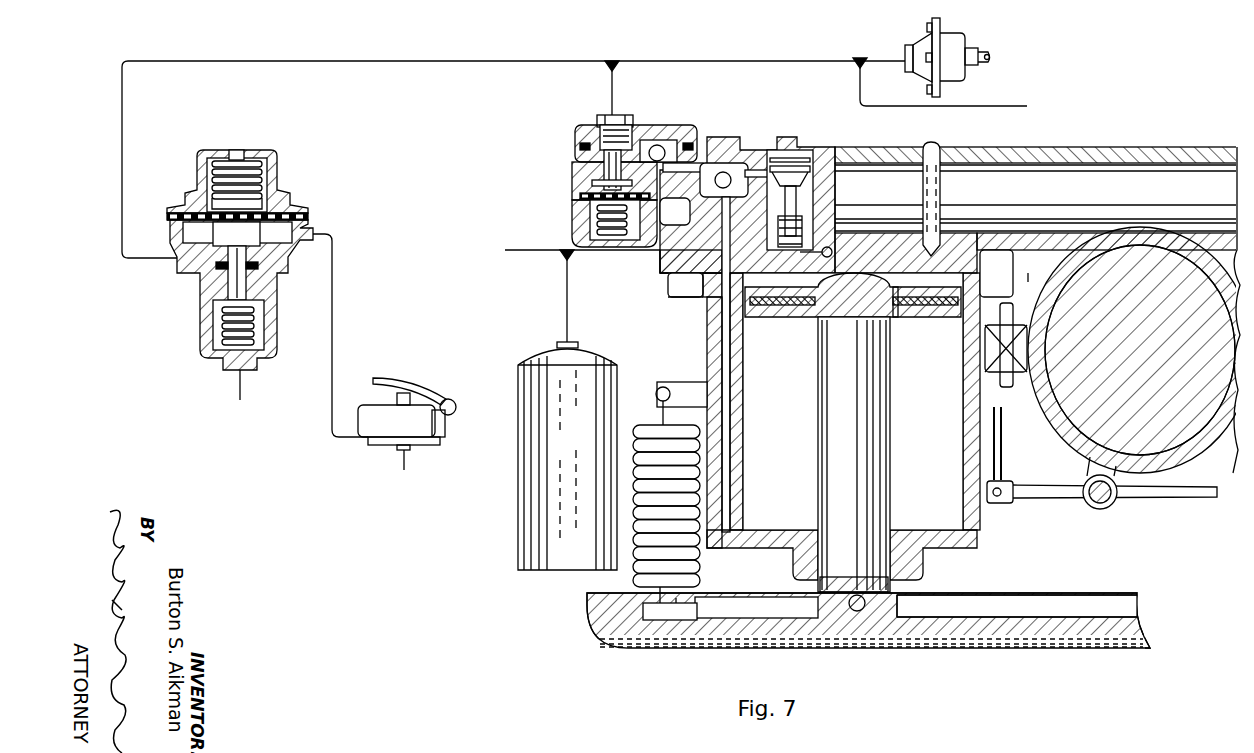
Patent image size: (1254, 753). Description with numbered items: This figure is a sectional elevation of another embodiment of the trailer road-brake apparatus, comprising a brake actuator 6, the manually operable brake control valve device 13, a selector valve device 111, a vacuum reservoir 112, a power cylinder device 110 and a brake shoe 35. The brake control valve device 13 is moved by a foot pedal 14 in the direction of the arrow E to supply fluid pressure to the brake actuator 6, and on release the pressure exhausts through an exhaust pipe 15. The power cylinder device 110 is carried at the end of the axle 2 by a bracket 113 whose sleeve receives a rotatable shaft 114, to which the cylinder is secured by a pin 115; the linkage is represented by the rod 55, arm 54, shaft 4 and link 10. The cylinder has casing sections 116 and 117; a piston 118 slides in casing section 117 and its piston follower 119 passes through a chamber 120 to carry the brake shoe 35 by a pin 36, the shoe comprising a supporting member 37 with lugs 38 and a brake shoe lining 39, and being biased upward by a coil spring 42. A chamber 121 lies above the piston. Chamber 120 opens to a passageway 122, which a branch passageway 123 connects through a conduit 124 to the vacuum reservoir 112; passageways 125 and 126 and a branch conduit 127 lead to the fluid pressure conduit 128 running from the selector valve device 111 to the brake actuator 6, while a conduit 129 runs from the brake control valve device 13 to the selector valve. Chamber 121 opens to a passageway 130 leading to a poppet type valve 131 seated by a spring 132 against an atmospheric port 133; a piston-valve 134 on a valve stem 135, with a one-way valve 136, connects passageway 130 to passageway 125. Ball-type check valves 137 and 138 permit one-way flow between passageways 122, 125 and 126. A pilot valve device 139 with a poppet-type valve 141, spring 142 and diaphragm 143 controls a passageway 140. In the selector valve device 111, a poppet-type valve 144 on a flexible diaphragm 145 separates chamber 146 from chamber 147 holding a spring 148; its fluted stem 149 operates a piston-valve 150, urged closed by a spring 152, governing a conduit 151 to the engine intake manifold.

The axle 2 is at (1090, 472).
The shaft 4 is at (1091, 504).
The brake actuator 6 is at (954, 72).
The link 10 is at (1158, 494).
The brake control valve device 13 is at (440, 419).
The foot pedal 14 is at (427, 392).
The exhaust pipe 15 is at (405, 462).
The brake shoe 35 is at (868, 639).
The pin 36 is at (822, 606).
The supporting member 37 is at (860, 626).
The lug 38 is at (893, 601).
The brake shoe lining 39 is at (966, 645).
The coil spring 42 is at (640, 571).
The arm 54 is at (1036, 498).
The rod 55 is at (996, 440).
The power cylinder device 110 is at (938, 354).
The selector valve device 111 is at (215, 280).
The vacuum reservoir 112 is at (528, 490).
The bracket 113 is at (1212, 447).
The shaft 114 is at (1035, 182).
The pin 115 is at (932, 150).
The casing section 116 is at (667, 279).
The casing section 117 is at (774, 542).
The piston 118 is at (760, 306).
The piston follower 119 is at (878, 498).
The chamber 120 is at (850, 356).
The chamber 121 is at (920, 306).
The passageway 122 is at (728, 497).
The branch passageway 123 is at (668, 251).
The conduit 124 is at (579, 252).
The passageway 125 is at (722, 159).
The passageway 126 is at (630, 121).
The branch conduit 127 is at (625, 88).
The fluid pressure conduit 128 is at (404, 62).
The fluid pressure conduit 129 is at (332, 247).
The passageway 130 is at (685, 285).
The poppet type valve 131 is at (1036, 212).
The spring 132 is at (794, 306).
The atmospheric port 133 is at (1036, 229).
The piston-valve 134 is at (806, 158).
The valve stem 135 is at (834, 199).
The one-way valve 136 is at (790, 183).
The ball-type check valve 137 is at (736, 152).
The ball-type check valve 138 is at (663, 147).
The pilot valve device 139 is at (618, 172).
The passageway 140 is at (676, 211).
The poppet-type valve 141 is at (602, 181).
The spring 142 is at (590, 233).
The diaphragm 143 is at (598, 216).
The poppet-type valve 144 is at (278, 256).
The flexible diaphragm 145 is at (178, 206).
The chamber 146 is at (182, 237).
The chamber 147 is at (287, 189).
The spring 148 is at (227, 167).
The fluted stem 149 is at (236, 270).
The piston-valve 150 is at (279, 305).
The conduit 151 is at (241, 383).
The spring 152 is at (216, 341).
The arrow E is at (415, 407).